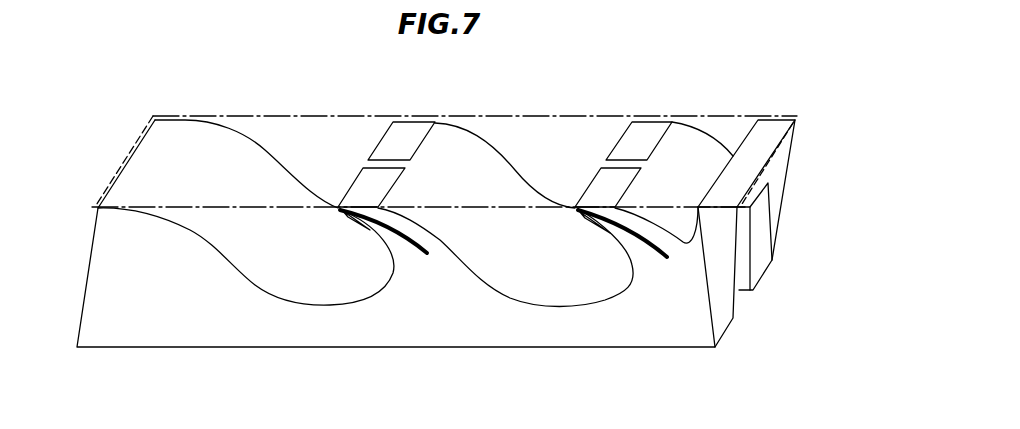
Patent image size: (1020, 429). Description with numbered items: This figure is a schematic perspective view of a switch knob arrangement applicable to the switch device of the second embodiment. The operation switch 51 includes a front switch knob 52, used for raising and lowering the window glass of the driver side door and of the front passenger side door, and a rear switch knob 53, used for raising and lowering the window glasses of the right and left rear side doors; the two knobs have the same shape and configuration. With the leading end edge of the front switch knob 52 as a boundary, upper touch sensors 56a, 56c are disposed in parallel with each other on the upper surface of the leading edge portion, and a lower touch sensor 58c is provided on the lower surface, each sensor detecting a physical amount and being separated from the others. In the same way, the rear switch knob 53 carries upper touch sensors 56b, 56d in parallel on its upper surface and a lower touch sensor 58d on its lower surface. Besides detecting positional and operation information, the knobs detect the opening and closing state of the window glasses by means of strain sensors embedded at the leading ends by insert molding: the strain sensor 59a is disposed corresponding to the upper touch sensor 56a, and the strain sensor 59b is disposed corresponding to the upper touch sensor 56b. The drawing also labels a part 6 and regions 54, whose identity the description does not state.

The member 6 is at (270, 113).
The operation switch 51 is at (180, 133).
The front switch knob 52 is at (448, 152).
The rear switch knob 53 is at (688, 152).
The recess 54 is at (300, 287).
The upper touch sensor 56a is at (408, 133).
The upper touch sensor 56b is at (638, 135).
The upper touch sensor 56c is at (363, 193).
The upper touch sensor 56d is at (612, 193).
The lower touch sensor 58c is at (347, 215).
The lower touch sensor 58d is at (593, 220).
The strain sensor 59a is at (421, 256).
The strain sensor 59b is at (663, 252).